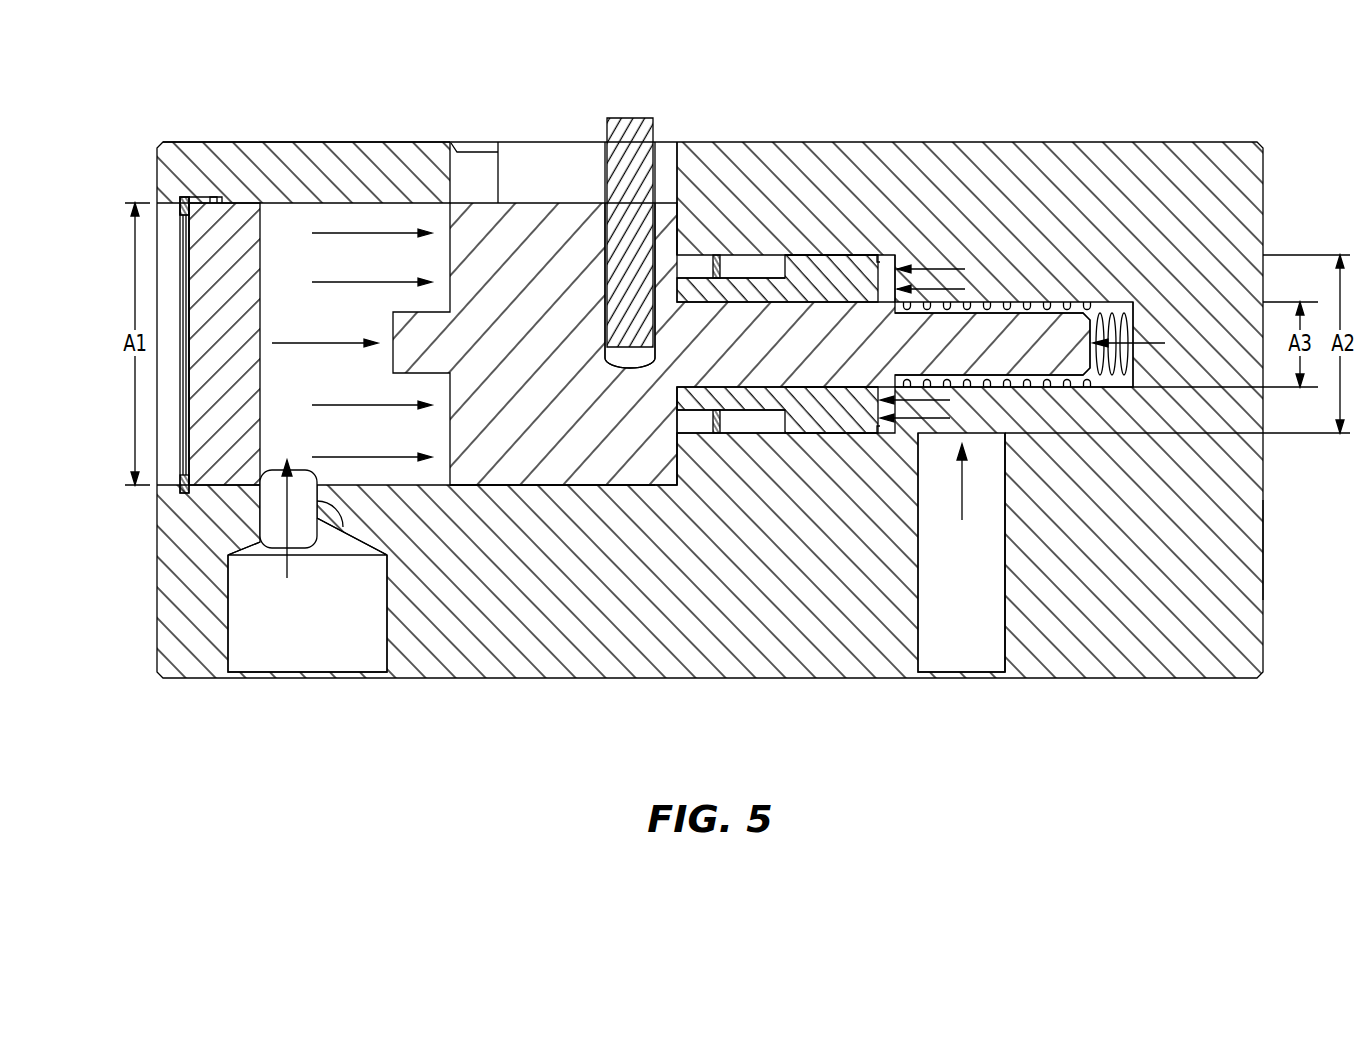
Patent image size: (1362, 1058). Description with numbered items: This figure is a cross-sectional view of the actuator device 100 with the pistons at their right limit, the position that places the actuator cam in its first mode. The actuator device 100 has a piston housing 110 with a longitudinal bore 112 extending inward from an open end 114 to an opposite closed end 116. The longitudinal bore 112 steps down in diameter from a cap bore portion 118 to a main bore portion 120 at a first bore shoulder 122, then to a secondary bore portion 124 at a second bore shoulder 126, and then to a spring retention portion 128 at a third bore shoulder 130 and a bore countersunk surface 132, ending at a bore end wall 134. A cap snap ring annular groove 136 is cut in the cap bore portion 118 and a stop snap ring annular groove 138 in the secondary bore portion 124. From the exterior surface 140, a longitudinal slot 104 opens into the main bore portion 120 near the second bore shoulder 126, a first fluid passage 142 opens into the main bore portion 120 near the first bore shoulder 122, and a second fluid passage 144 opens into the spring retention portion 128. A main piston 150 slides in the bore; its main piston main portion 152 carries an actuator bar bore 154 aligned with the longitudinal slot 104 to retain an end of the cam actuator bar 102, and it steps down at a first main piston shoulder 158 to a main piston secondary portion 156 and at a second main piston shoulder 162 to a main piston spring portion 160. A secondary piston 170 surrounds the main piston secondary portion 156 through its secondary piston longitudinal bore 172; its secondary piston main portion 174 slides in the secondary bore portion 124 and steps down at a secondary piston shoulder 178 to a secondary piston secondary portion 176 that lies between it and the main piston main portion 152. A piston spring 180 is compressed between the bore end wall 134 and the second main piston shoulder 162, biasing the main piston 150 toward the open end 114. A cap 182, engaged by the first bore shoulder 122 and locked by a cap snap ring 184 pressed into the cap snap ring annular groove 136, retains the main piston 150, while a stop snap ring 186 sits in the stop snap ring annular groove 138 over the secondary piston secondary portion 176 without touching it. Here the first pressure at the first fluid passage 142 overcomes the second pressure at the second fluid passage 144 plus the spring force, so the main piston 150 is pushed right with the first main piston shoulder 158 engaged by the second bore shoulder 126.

The actuator device 100 is at (131, 99).
The cam actuator bar 102 is at (634, 118).
The longitudinal slot 104 is at (474, 170).
The piston housing 110 is at (1264, 143).
The longitudinal bore 112 is at (273, 398).
The open end 114 is at (155, 248).
The closed end 116 is at (1264, 601).
The cap bore portion 118 is at (176, 489).
The main bore portion 120 is at (378, 480).
The first bore shoulder 122 is at (216, 199).
The secondary bore portion 124 is at (747, 433).
The second bore shoulder 126 is at (673, 248).
The spring retention portion 128 is at (996, 636).
The third bore shoulder 130 is at (893, 258).
The bore countersunk surface 132 is at (873, 389).
The bore end wall 134 is at (1105, 389).
The cap snap ring annular groove 136 is at (185, 198).
The stop snap ring annular groove 138 is at (718, 434).
The exterior surface 140 is at (303, 142).
The first fluid passage 142 is at (235, 645).
The second fluid passage 144 is at (988, 681).
The main piston 150 is at (450, 452).
The main piston main portion 152 is at (557, 460).
The actuator bar bore 154 is at (614, 225).
The main piston secondary portion 156 is at (803, 389).
The first main piston shoulder 158 is at (690, 434).
The main piston spring portion 160 is at (1083, 338).
The second main piston shoulder 162 is at (913, 387).
The secondary piston 170 is at (878, 256).
The secondary piston longitudinal bore 172 is at (833, 389).
The secondary piston main portion 174 is at (825, 258).
The secondary piston secondary portion 176 is at (773, 401).
The secondary piston shoulder 178 is at (785, 262).
The piston spring 180 is at (1090, 399).
The cap 182 is at (205, 283).
The cap snap ring 184 is at (178, 196).
The stop snap ring 186 is at (714, 255).